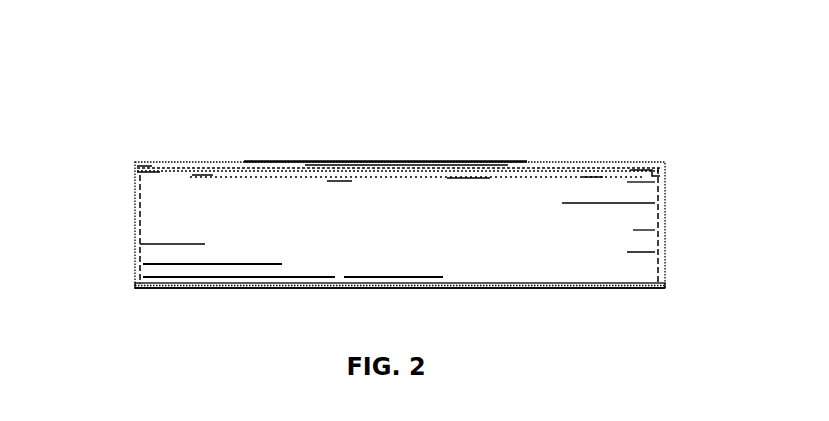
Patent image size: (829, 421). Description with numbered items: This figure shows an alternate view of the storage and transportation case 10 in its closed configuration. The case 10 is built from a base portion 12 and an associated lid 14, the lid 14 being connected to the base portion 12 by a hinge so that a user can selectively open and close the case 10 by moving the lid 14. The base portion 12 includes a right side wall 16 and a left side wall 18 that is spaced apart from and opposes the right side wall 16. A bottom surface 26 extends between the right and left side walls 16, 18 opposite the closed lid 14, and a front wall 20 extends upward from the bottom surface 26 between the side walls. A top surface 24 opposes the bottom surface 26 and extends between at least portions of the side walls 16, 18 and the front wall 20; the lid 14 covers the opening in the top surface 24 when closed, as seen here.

The storage and transportation case 10 is at (147, 53).
The base portion 12 is at (637, 328).
The lid 14 is at (366, 162).
The right side wall 16 is at (664, 233).
The left side wall 18 is at (133, 221).
The front wall 20 is at (255, 263).
The top surface 24 is at (172, 183).
The bottom surface 26 is at (360, 285).